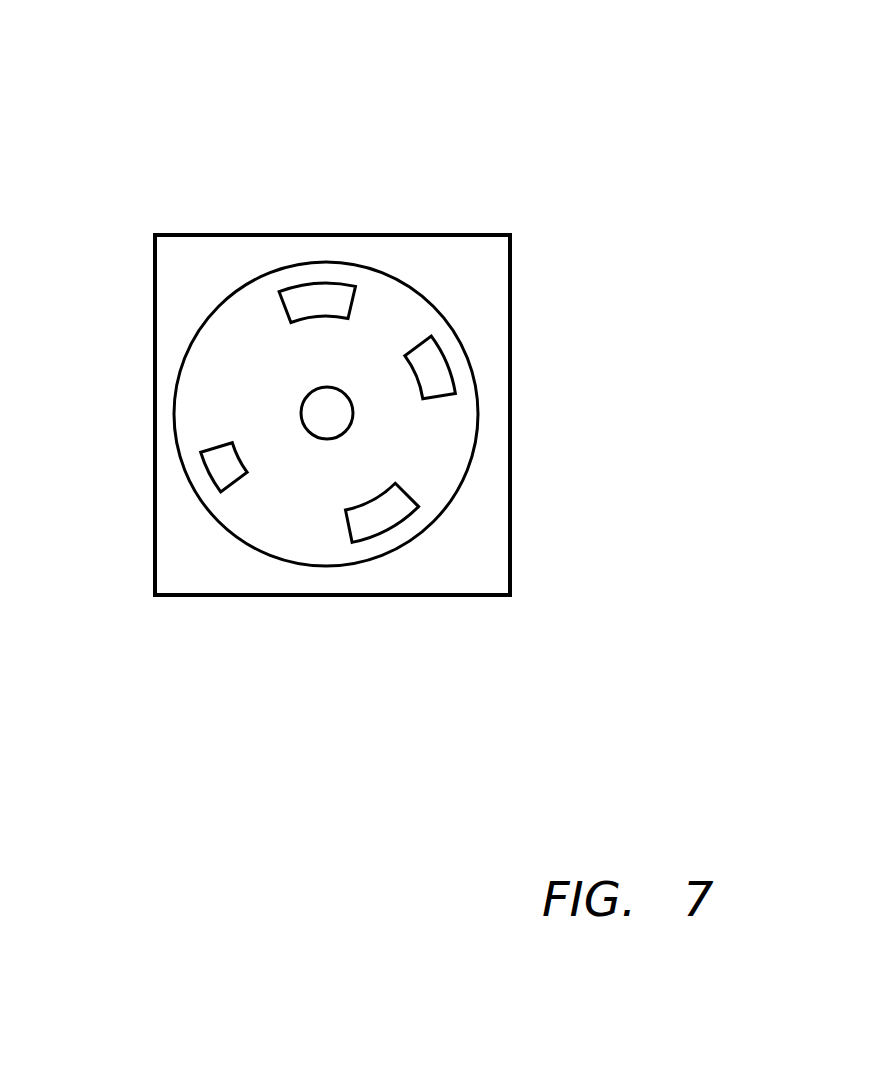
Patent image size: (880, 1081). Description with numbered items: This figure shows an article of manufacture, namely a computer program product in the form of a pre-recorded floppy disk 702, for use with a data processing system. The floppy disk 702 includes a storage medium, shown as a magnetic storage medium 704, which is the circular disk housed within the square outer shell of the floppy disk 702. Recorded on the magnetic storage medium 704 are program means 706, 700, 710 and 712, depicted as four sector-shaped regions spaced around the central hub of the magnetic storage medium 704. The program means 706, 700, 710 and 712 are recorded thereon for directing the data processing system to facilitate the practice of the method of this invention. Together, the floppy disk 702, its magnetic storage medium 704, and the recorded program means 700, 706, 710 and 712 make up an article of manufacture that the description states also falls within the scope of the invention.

The program means 700 is at (368, 522).
The pre-recorded floppy disk 702 is at (362, 161).
The magnetic storage medium 704 is at (422, 432).
The program means 706 is at (217, 465).
The program means 710 is at (432, 372).
The program means 712 is at (340, 297).